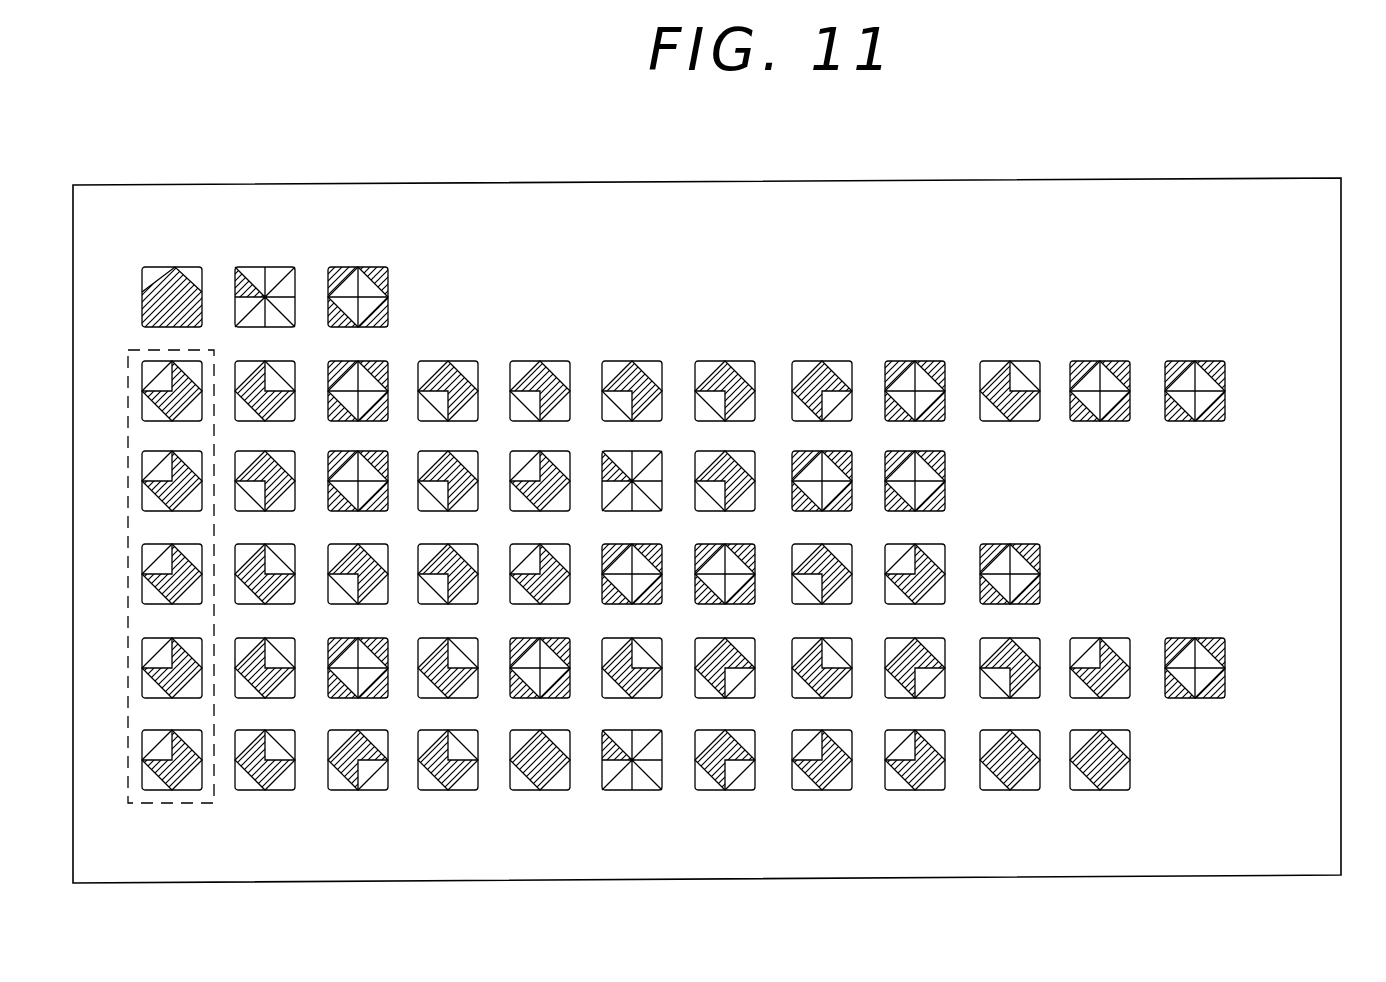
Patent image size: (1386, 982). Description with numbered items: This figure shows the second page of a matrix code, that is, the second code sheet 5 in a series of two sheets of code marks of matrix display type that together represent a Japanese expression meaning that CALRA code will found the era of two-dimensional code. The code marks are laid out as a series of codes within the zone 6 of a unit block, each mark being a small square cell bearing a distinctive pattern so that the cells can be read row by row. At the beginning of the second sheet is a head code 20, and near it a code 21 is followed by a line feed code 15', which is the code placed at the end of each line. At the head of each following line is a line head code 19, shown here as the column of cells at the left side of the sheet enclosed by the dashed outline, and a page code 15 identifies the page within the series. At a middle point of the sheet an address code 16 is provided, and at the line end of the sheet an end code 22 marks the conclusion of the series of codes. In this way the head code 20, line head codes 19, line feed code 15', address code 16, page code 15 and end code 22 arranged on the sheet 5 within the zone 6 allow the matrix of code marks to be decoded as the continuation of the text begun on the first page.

The code sheet 5 is at (1323, 247).
The zone of a unit block 6 is at (1223, 525).
The page code 15 is at (1110, 428).
The line feed code 15' is at (370, 214).
The address code 16 is at (602, 481).
The line head code 19 is at (177, 818).
The head code 20 is at (180, 236).
The code 21 is at (271, 236).
The end code 22 is at (1098, 802).